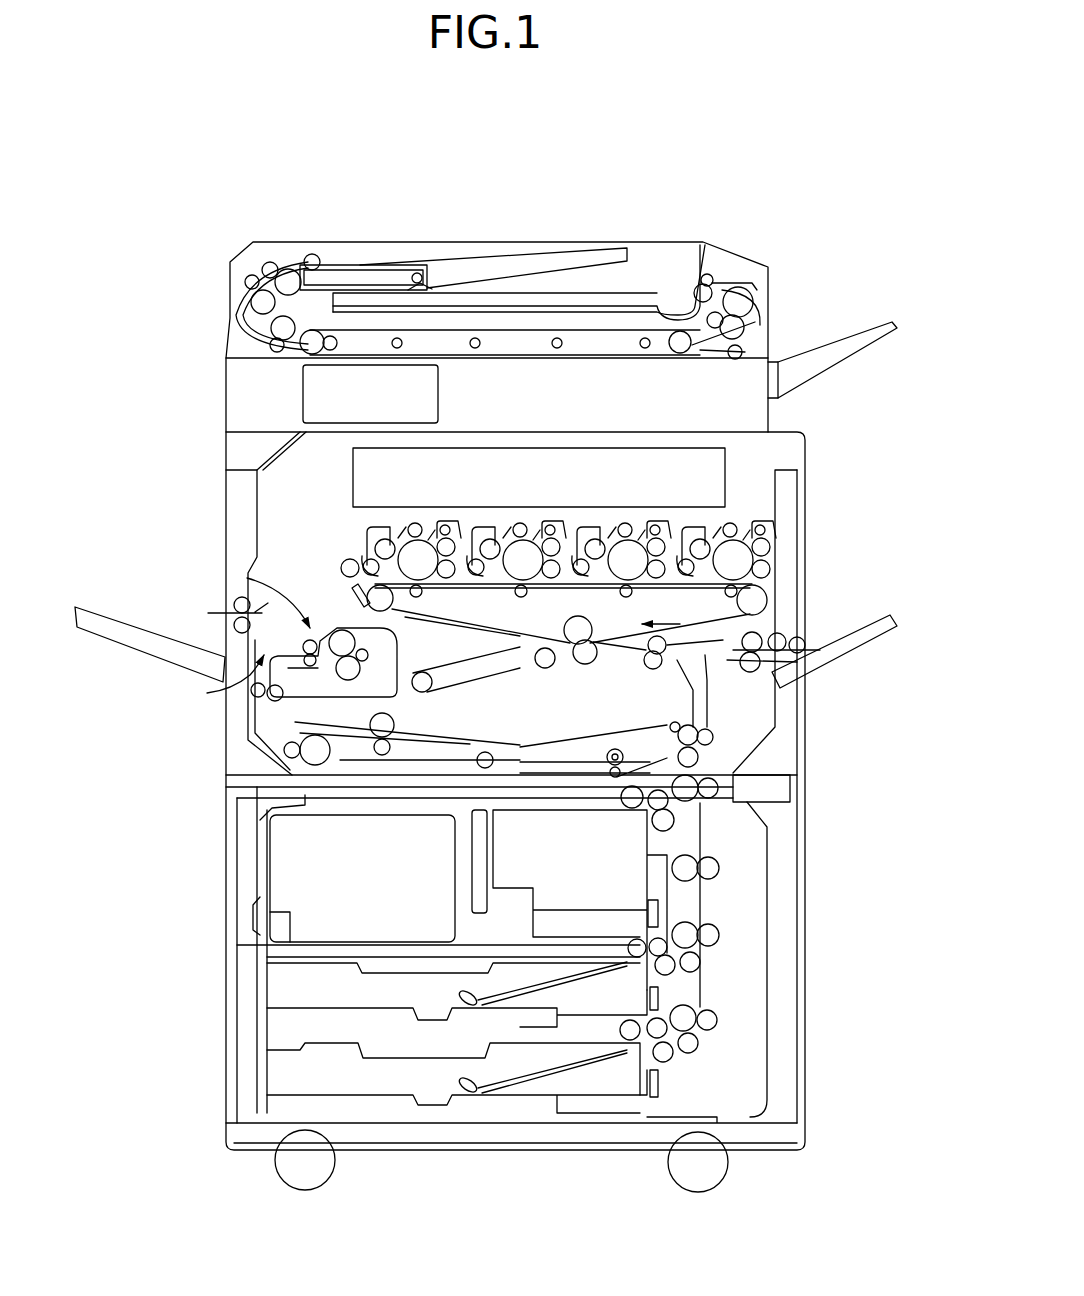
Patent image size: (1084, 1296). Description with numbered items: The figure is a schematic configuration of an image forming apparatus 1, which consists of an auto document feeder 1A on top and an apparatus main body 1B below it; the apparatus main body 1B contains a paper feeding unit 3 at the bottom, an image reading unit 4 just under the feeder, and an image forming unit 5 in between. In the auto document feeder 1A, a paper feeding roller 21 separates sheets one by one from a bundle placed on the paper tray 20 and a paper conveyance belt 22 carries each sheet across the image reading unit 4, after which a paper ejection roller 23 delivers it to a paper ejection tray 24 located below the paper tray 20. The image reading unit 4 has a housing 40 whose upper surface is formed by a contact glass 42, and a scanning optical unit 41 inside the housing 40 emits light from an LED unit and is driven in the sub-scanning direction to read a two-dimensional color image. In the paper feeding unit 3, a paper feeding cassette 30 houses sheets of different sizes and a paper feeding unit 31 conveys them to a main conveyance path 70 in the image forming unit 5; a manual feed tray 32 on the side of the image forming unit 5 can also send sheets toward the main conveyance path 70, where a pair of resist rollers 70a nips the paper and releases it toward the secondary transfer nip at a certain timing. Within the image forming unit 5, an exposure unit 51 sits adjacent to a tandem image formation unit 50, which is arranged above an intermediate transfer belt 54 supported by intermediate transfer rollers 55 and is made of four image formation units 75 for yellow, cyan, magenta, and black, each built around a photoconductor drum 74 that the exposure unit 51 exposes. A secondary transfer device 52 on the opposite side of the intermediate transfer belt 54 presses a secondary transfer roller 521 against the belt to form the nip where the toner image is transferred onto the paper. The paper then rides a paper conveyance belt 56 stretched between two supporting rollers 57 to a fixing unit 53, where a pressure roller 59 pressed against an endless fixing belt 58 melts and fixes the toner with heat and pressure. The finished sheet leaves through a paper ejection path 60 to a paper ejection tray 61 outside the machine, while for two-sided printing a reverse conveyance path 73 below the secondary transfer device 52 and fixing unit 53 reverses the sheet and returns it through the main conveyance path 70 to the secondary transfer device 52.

The image forming apparatus 1 is at (738, 156).
The auto document feeder (ADF) 1A is at (190, 298).
The apparatus main body 1B is at (190, 368).
The paper feeding unit 3 is at (494, 987).
The image reading unit 4 is at (524, 380).
The image forming unit 5 is at (210, 518).
The paper tray 20 is at (566, 255).
The paper feeding roller 21 is at (250, 265).
The paper conveyance belt 22 is at (520, 328).
The paper ejection roller 23 is at (741, 274).
The paper ejection tray 24 is at (637, 308).
The paper feeding cassette 30 is at (385, 1088).
The paper feeding unit 31 is at (733, 977).
The manual feed tray 32 is at (875, 620).
The housing 40 is at (768, 413).
The scanning optical unit 41 is at (441, 401).
The contact glass 42 is at (614, 355).
The tandem image formation unit 50 is at (342, 542).
The exposure unit 51 is at (350, 475).
The secondary transfer device 52 is at (573, 672).
The secondary transfer roller 521 is at (588, 664).
The fixing unit 53 is at (240, 584).
The intermediate transfer belt 54 is at (418, 621).
The intermediate transfer rollers 55 is at (423, 591).
The paper conveyance belt 56 is at (467, 687).
The supporting rollers 57 is at (532, 655).
The fixing belt 58 is at (356, 628).
The pressure roller 59 is at (350, 682).
The paper ejection path 60 is at (207, 693).
The paper ejection tray 61 is at (92, 603).
The main conveyance path 70 is at (630, 661).
The pair of resist rollers 70a is at (690, 640).
The reverse conveyance path 73 is at (242, 715).
The photoconductor drum 74 is at (749, 566).
The image formation units 75 is at (404, 516).